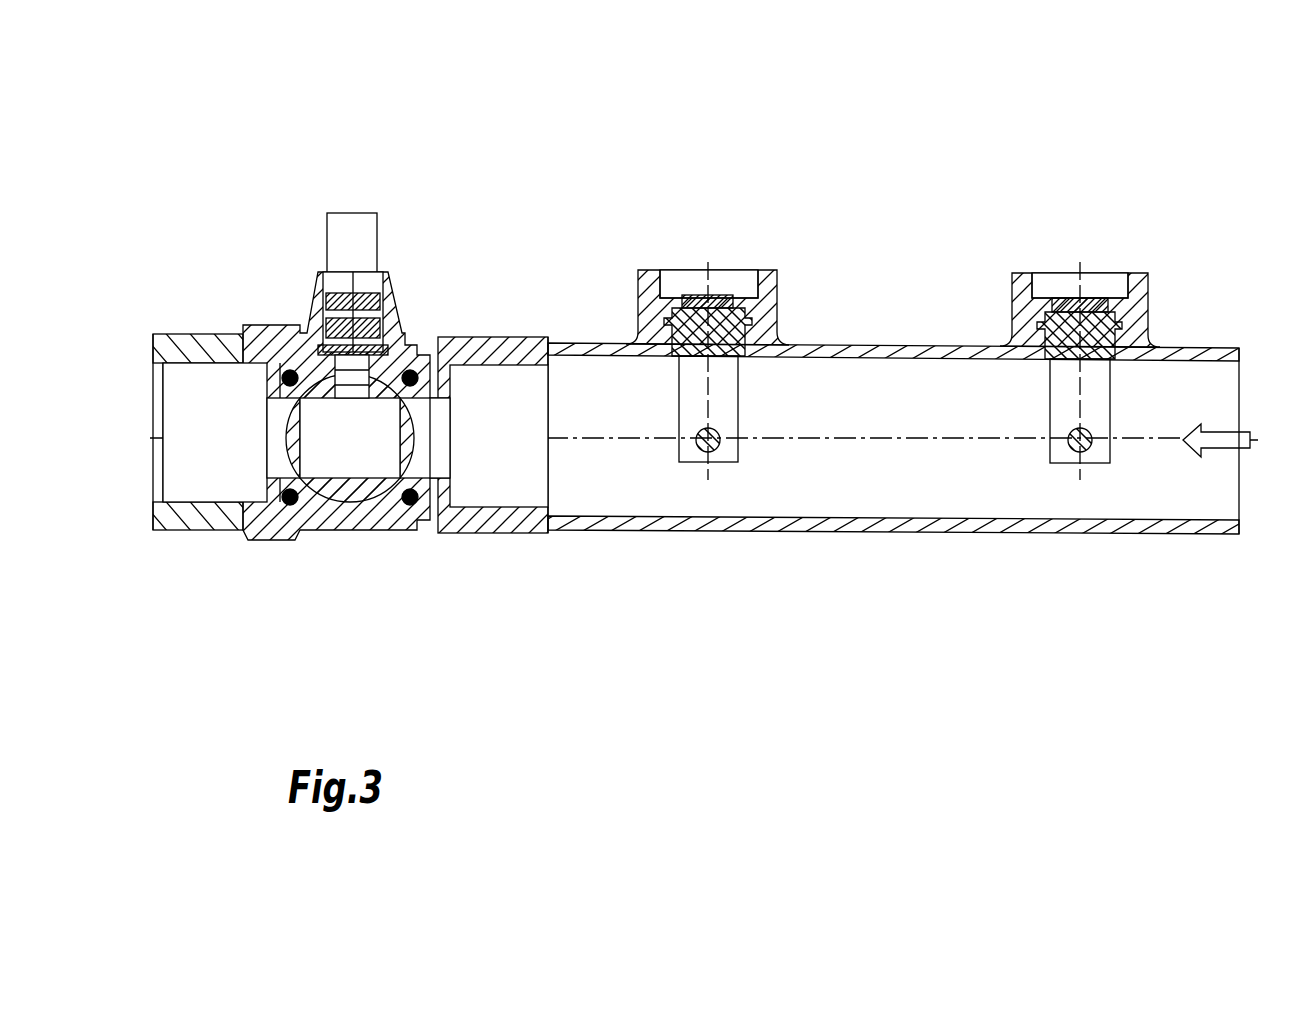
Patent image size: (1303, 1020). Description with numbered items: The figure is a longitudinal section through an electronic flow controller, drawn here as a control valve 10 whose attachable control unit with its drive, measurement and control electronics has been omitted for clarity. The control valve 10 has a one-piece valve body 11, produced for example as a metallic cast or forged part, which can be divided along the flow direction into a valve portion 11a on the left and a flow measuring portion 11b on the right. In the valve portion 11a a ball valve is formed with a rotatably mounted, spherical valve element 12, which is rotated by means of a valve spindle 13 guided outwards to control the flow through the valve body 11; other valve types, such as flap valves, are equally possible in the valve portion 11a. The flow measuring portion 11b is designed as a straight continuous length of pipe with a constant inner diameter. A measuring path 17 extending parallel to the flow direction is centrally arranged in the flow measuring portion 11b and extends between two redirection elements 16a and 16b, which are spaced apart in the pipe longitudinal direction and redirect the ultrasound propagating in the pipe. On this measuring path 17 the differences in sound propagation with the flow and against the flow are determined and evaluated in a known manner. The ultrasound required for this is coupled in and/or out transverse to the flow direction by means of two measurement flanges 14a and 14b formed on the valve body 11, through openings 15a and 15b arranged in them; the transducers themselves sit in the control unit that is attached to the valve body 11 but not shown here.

The control valve 10 is at (487, 212).
The valve body 11 is at (866, 346).
The valve portion 11a is at (545, 568).
The flow measuring portion 11b is at (1223, 574).
The valve element 12 is at (318, 362).
The valve spindle 13 is at (358, 240).
The measurement flange 14a is at (763, 276).
The measurement flange 14b is at (1143, 280).
The opening 15a is at (717, 297).
The opening 15b is at (1092, 300).
The redirection element 16a is at (700, 428).
The redirection element 16b is at (1075, 428).
The measuring path 17 is at (945, 440).